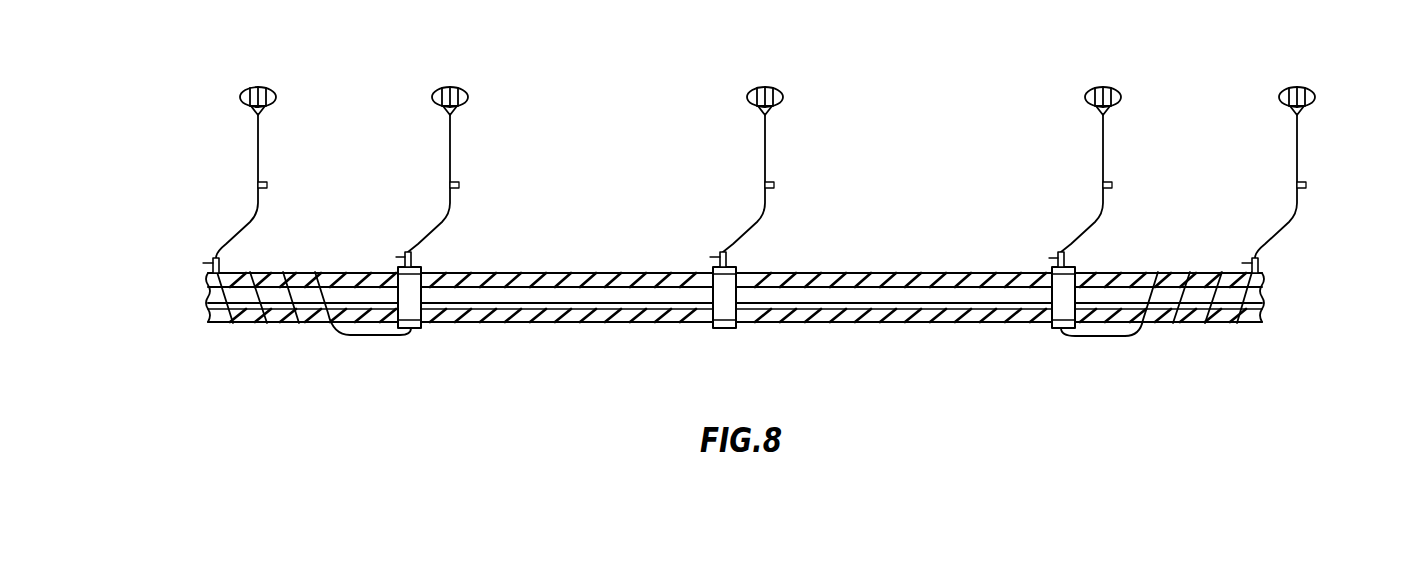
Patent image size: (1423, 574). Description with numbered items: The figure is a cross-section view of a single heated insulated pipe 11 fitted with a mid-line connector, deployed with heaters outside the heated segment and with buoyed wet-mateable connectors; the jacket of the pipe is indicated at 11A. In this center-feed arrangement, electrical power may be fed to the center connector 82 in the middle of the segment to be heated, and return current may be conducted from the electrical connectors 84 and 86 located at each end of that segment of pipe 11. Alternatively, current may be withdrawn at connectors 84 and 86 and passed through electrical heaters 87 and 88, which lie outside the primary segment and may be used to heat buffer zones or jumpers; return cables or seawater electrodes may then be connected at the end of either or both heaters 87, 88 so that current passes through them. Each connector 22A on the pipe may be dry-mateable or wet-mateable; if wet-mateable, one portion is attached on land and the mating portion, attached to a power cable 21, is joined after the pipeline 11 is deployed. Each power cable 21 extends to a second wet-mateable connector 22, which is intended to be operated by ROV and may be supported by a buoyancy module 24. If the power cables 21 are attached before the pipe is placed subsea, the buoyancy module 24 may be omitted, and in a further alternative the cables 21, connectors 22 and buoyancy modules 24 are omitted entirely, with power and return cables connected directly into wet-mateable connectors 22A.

The pipe 11 is at (208, 298).
The cable jacket 11A is at (658, 315).
The power cable 21 is at (232, 225).
The wet-mateable connector 22 is at (258, 185).
The connector 22A is at (203, 263).
The buoyancy module 24 is at (277, 98).
The center connector 82 is at (727, 329).
The electrical connector 84 is at (412, 329).
The electrical connector 86 is at (1056, 330).
The electrical heater 87 is at (287, 318).
The electrical heater 88 is at (1222, 303).